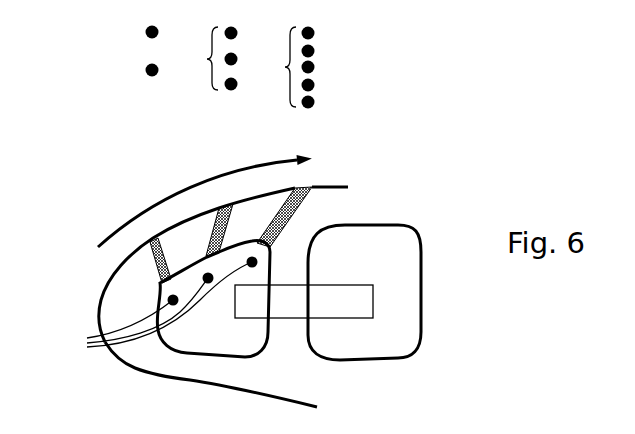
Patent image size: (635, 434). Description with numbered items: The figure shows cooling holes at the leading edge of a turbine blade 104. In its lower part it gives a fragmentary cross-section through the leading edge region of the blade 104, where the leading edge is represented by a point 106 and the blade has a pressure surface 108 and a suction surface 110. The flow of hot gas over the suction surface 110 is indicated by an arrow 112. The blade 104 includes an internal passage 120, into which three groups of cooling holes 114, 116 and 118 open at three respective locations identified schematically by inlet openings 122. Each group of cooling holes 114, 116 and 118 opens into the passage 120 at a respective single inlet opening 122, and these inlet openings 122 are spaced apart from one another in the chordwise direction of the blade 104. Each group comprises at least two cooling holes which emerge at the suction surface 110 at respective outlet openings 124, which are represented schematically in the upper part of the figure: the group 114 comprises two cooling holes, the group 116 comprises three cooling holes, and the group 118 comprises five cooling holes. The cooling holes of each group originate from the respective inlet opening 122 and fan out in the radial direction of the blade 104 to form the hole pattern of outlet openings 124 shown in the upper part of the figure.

The turbine blade 104 is at (395, 200).
The leading edge 106 is at (98, 322).
The pressure surface 108 is at (143, 367).
The suction surface 110 is at (332, 184).
The arrow 112 is at (115, 230).
The first group of cooling holes 114 is at (156, 268).
The second group of cooling holes 116 is at (207, 233).
The third group of cooling holes 118 is at (270, 217).
The passage 120 is at (240, 346).
The inlet openings 122 is at (147, 311).
The outlet openings 124 is at (290, 67).